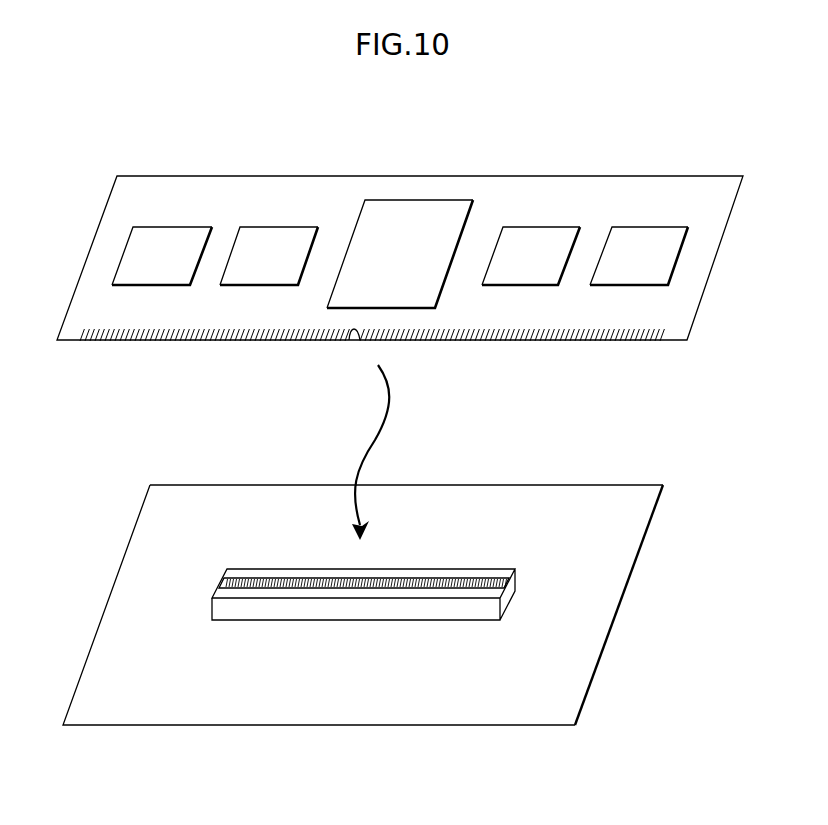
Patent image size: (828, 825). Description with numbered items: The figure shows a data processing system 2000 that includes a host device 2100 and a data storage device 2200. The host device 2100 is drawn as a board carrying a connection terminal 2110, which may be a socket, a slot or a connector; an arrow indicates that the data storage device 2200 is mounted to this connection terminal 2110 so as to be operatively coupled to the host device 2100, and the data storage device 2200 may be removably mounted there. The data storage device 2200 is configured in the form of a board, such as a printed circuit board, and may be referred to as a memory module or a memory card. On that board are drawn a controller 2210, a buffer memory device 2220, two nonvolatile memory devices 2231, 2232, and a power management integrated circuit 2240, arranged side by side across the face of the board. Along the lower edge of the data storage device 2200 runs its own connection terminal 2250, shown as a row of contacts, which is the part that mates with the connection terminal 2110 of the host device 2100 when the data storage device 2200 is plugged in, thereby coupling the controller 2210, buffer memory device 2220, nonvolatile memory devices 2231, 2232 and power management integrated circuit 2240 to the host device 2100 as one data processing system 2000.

The data processing system 2000 is at (92, 137).
The host device 2100 is at (363, 605).
The connection terminal 2110 is at (537, 564).
The data storage device 2200 is at (400, 258).
The controller 2210 is at (400, 254).
The buffer memory device 2220 is at (269, 256).
The nonvolatile memory device 2231 is at (531, 256).
The nonvolatile memory device 2232 is at (639, 256).
The power management integrated circuit 2240 is at (162, 256).
The connection terminal 2250 is at (98, 342).